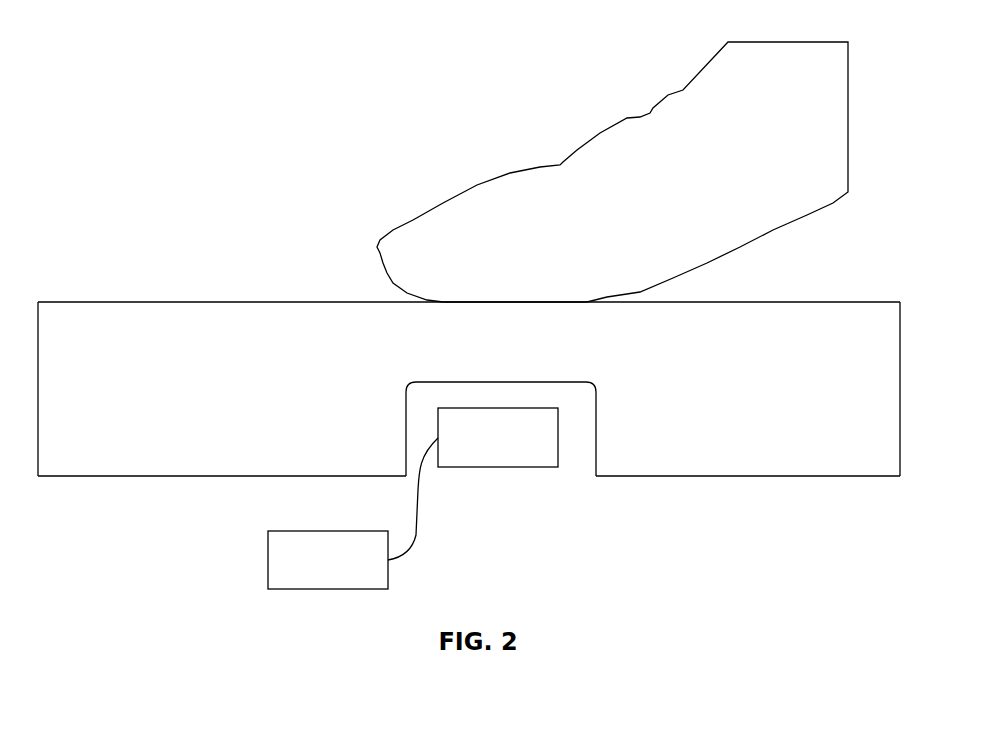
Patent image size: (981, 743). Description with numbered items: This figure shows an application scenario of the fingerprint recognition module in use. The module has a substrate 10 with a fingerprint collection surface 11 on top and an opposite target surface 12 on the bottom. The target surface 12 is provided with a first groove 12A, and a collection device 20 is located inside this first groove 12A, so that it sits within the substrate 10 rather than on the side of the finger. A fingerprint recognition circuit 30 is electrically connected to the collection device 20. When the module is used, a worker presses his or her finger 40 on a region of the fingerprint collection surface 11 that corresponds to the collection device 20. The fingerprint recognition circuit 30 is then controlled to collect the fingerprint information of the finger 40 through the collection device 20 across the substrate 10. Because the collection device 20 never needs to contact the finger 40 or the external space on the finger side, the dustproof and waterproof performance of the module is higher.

The substrate 10 is at (810, 310).
The fingerprint collection surface 11 is at (863, 301).
The target surface 12 is at (679, 476).
The first groove 12A is at (578, 452).
The collection device 20 is at (499, 467).
The fingerprint recognition circuit 30 is at (268, 561).
The finger 40 is at (808, 121).